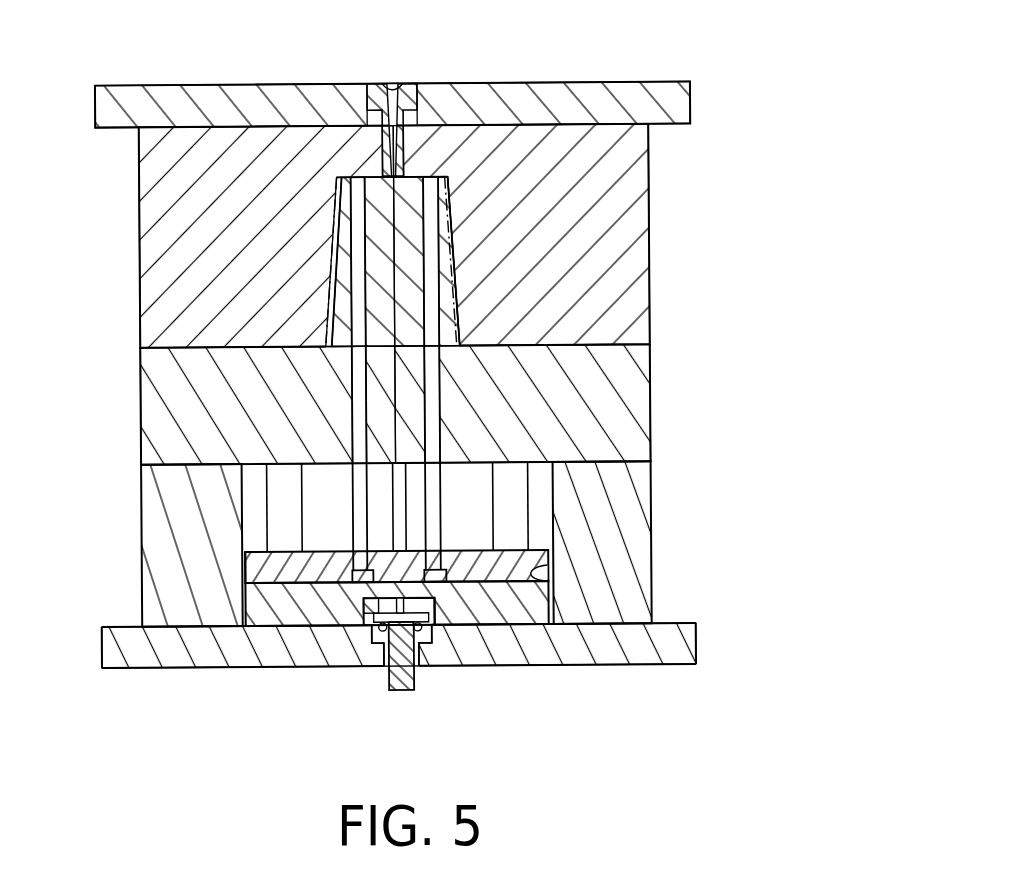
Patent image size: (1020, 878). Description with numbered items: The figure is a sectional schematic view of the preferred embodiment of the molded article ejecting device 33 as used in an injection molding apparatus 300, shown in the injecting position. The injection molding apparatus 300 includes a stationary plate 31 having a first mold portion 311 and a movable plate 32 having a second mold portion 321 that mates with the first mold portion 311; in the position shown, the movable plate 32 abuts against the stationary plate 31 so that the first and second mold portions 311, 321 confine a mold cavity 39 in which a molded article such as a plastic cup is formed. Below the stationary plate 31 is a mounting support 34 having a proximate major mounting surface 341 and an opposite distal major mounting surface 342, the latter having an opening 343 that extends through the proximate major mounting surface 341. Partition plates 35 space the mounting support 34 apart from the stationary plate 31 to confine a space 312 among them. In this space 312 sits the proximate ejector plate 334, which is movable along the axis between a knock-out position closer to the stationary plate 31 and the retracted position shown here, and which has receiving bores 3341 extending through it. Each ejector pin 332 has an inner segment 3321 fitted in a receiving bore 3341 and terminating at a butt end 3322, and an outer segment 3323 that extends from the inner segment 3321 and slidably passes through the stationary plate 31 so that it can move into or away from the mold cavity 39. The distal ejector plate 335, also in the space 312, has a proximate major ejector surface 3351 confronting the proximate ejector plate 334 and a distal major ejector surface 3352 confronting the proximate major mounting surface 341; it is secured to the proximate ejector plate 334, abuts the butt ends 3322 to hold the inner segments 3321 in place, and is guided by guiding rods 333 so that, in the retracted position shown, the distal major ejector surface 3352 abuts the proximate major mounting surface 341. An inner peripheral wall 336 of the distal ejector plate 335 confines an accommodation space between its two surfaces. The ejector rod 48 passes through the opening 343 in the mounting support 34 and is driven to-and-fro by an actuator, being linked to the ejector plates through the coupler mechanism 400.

The injection molding apparatus 300 is at (723, 75).
The movable plate 32 is at (650, 200).
The second mold portion 321 is at (453, 240).
The first mold portion 311 is at (452, 272).
The mold cavity 39 is at (333, 277).
The stationary plate 31 is at (650, 373).
The ejector pins 332 is at (438, 372).
The inner segment 3321 is at (362, 528).
The butt end 3322 is at (345, 578).
The outer segment 3323 is at (353, 387).
The guiding rods 333 is at (273, 505).
The space 312 is at (253, 530).
The molded article ejecting device 33 is at (540, 520).
The partition plates 35 is at (177, 538).
The proximate ejector plate 334 is at (547, 551).
The receiving bores 3341 is at (245, 551).
The proximate major ejector surface 3351 is at (548, 566).
The distal ejector plate 335 is at (548, 608).
The distal major ejector surface 3352 is at (443, 614).
The inner peripheral wall 336 is at (360, 610).
The coupler mechanism 400 is at (462, 614).
The ejector rod 48 is at (418, 681).
The opening 343 is at (382, 652).
The mounting support 34 is at (696, 645).
The proximate major mounting surface 341 is at (120, 627).
The distal major mounting surface 342 is at (117, 668).